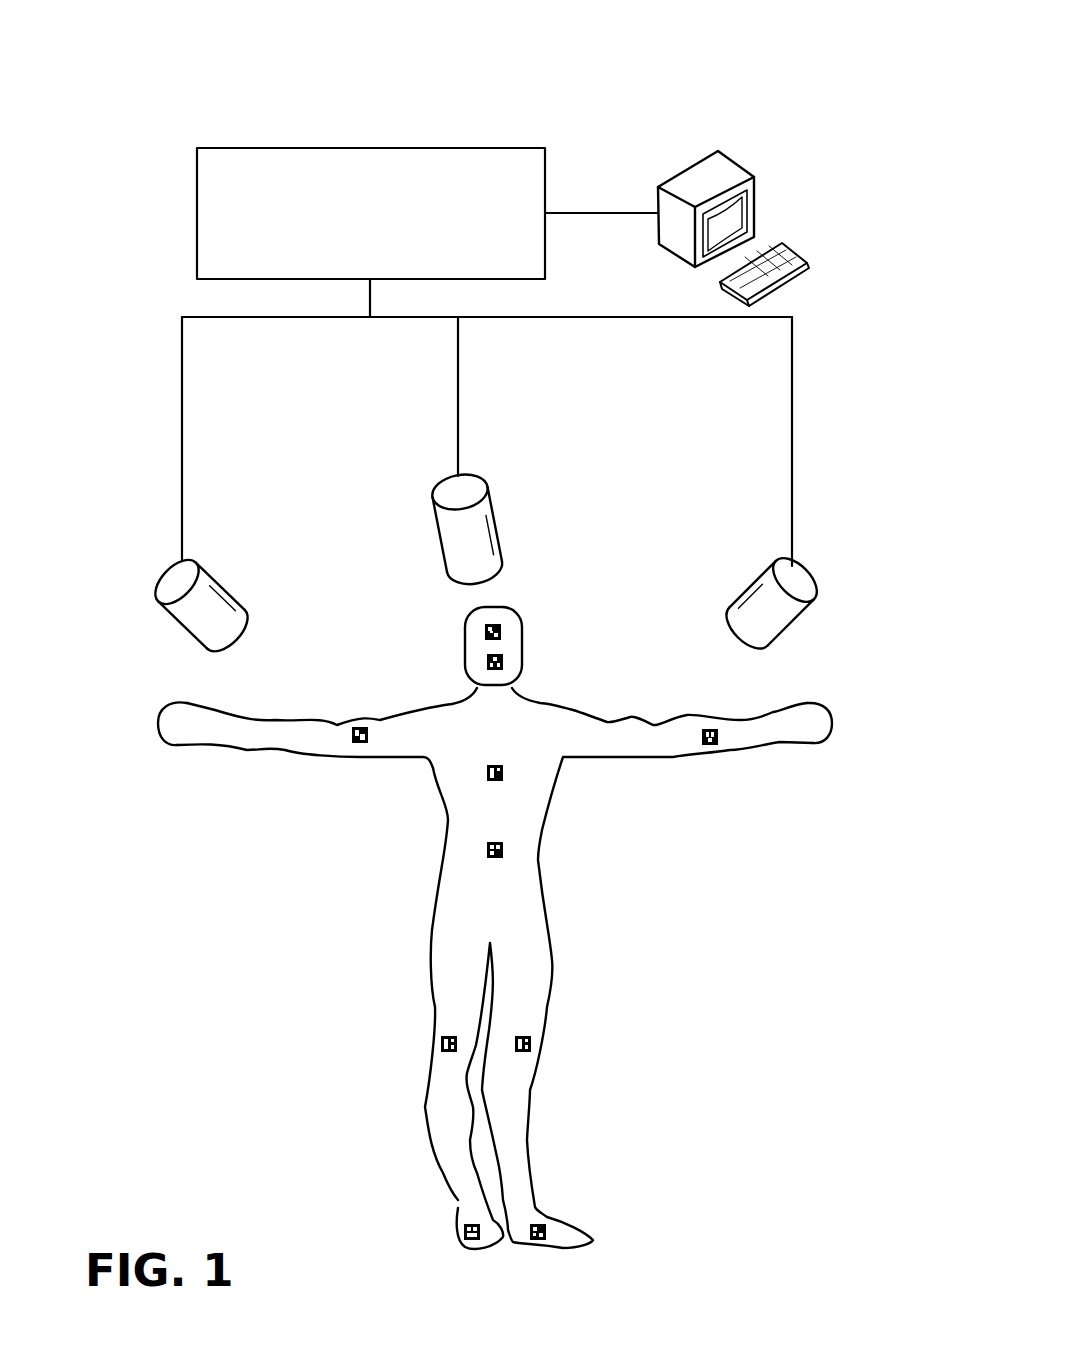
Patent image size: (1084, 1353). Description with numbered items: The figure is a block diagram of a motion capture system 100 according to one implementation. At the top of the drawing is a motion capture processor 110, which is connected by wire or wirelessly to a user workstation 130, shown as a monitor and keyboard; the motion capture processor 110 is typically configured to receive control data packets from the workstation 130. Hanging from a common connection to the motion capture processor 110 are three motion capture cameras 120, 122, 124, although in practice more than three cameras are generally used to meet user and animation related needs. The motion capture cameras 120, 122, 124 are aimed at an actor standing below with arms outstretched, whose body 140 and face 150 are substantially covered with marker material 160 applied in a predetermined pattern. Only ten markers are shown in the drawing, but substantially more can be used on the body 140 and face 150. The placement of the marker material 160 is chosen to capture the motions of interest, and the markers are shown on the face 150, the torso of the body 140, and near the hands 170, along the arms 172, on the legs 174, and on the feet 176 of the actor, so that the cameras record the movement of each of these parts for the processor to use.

The motion capture system 100 is at (222, 69).
The motion capture processor 110 is at (530, 196).
The motion capture camera 120 is at (215, 575).
The motion capture camera 122 is at (492, 502).
The motion capture camera 124 is at (738, 593).
The user workstation 130 is at (737, 163).
The actor's body 140 is at (390, 863).
The actor's face 150 is at (518, 662).
The marker material 160 is at (702, 745).
The hands 170 is at (182, 747).
The arms 172 is at (327, 757).
The legs 174 is at (425, 1118).
The feet 176 is at (455, 1212).